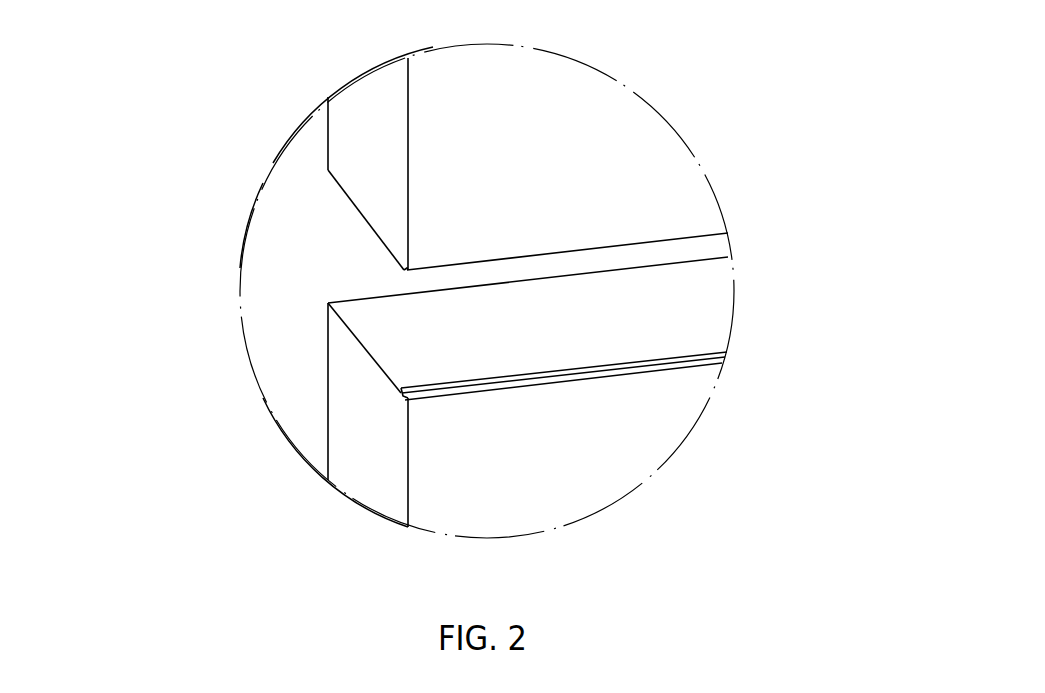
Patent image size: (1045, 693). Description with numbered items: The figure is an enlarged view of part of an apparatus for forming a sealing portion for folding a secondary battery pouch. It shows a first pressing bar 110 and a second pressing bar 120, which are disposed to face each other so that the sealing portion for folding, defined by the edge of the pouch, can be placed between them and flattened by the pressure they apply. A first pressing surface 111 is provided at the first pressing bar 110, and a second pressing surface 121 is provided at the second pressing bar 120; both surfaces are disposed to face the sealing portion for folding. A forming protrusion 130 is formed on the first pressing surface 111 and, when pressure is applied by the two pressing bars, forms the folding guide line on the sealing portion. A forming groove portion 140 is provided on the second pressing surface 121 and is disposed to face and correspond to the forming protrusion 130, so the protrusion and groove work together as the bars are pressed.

The first pressing bar 110 is at (353, 137).
The first pressing surface 111 is at (355, 206).
The second pressing bar 120 is at (343, 427).
The second pressing surface 121 is at (688, 312).
The forming protrusion 130 is at (403, 270).
The forming groove portion 140 is at (403, 396).